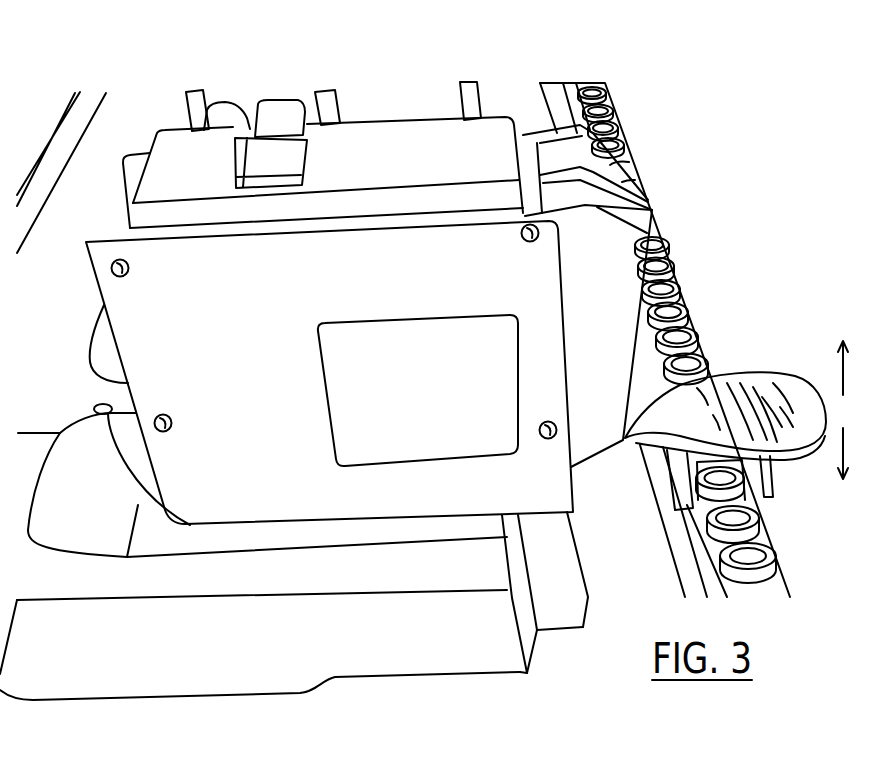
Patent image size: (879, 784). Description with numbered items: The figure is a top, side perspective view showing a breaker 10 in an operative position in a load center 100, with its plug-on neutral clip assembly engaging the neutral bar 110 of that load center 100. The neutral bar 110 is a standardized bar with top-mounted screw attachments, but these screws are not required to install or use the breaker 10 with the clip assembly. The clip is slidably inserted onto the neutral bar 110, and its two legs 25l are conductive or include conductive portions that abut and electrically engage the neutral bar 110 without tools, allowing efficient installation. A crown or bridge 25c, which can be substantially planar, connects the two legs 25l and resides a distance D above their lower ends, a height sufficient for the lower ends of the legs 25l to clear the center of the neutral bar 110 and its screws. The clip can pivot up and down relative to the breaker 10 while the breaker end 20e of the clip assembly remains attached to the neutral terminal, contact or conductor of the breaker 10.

The breaker 10 is at (420, 140).
The neutral bar 110 is at (565, 62).
The breaker end 20e is at (642, 386).
The legs 25l is at (667, 492).
The crown or bridge 25c is at (722, 467).
The load center 100 is at (340, 680).
The distance D is at (842, 410).